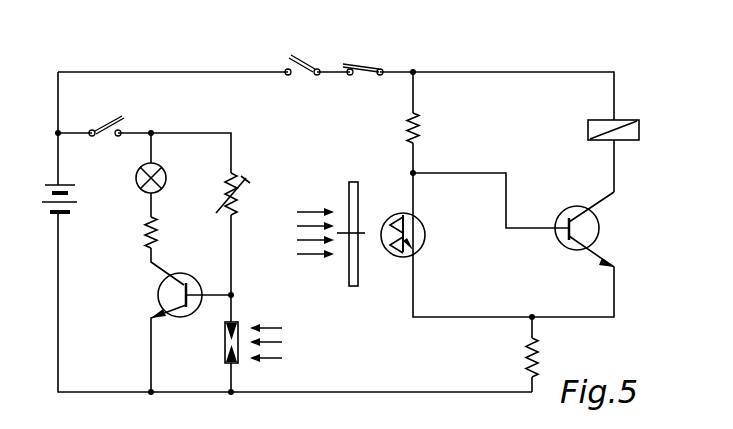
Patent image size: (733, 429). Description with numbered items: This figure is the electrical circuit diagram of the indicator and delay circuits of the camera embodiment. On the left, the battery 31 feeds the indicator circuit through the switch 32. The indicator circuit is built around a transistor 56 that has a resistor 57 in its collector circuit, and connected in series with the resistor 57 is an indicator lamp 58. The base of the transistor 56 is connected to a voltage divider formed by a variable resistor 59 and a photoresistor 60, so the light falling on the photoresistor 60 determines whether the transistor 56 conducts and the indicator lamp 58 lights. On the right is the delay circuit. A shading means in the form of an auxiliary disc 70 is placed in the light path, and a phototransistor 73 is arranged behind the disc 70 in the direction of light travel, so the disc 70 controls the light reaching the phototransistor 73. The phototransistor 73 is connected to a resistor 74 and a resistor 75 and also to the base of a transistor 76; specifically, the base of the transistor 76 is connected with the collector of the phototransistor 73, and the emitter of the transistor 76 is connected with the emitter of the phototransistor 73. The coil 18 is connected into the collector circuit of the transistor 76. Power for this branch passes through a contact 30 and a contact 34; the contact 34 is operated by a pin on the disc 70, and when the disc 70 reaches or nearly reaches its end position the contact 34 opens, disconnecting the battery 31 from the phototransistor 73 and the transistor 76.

The coil 18 is at (587, 130).
The switch 30 is at (293, 78).
The battery 31 is at (75, 205).
The switch 32 is at (125, 124).
The contact 34 is at (354, 78).
The transistor 56 is at (158, 297).
The resistor 57 is at (157, 234).
The indicator lamp 58 is at (136, 176).
The variable resistor 59 is at (233, 197).
The photoresistor 60 is at (240, 330).
The auxiliary disc 70 is at (349, 190).
The phototransistor 73 is at (425, 244).
The resistor 74 is at (419, 130).
The resistor 75 is at (526, 358).
The transistor 76 is at (565, 210).